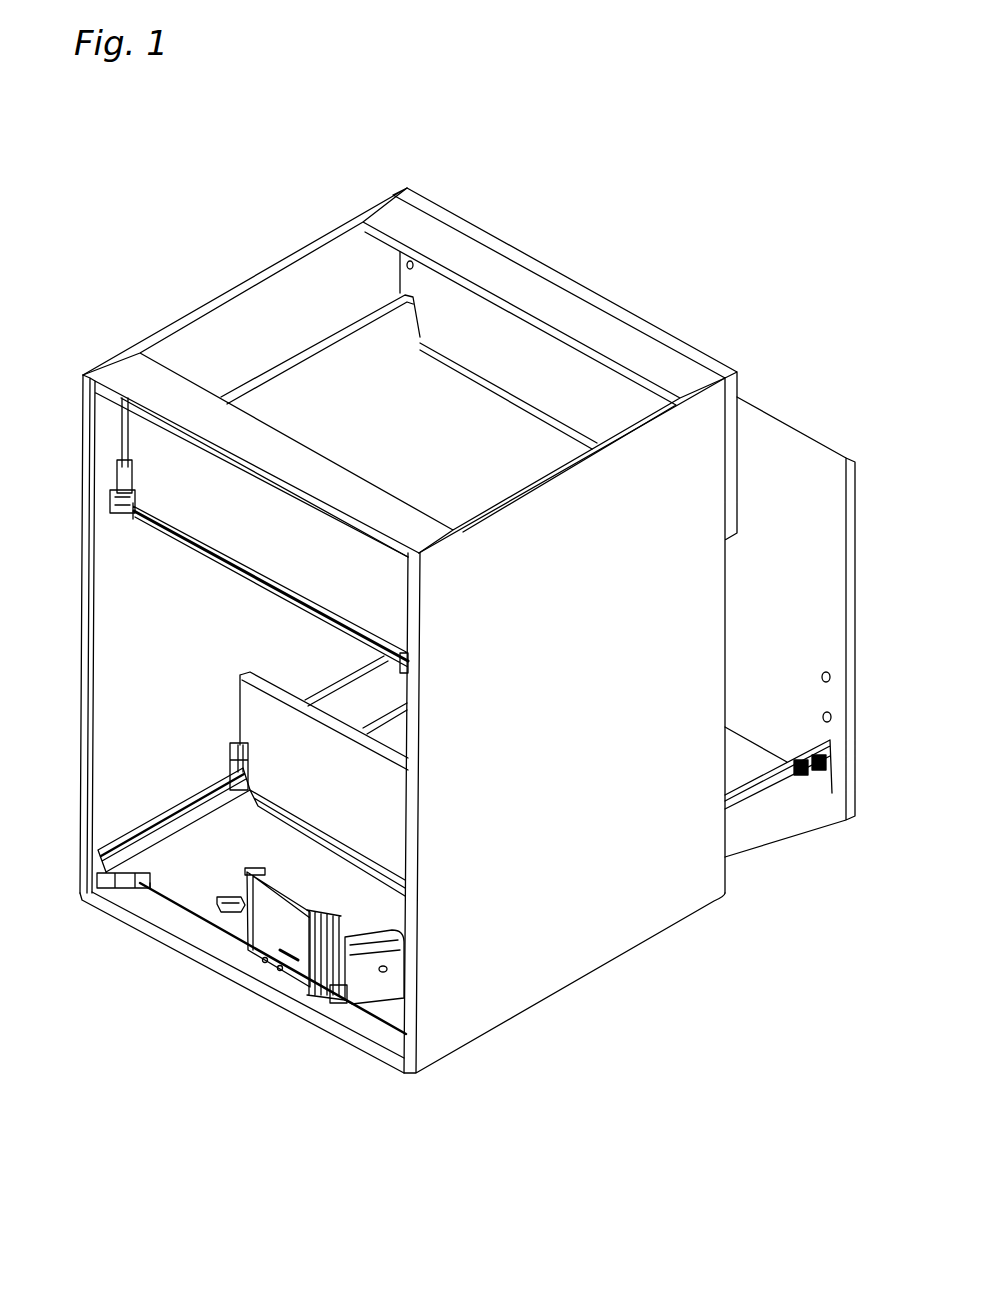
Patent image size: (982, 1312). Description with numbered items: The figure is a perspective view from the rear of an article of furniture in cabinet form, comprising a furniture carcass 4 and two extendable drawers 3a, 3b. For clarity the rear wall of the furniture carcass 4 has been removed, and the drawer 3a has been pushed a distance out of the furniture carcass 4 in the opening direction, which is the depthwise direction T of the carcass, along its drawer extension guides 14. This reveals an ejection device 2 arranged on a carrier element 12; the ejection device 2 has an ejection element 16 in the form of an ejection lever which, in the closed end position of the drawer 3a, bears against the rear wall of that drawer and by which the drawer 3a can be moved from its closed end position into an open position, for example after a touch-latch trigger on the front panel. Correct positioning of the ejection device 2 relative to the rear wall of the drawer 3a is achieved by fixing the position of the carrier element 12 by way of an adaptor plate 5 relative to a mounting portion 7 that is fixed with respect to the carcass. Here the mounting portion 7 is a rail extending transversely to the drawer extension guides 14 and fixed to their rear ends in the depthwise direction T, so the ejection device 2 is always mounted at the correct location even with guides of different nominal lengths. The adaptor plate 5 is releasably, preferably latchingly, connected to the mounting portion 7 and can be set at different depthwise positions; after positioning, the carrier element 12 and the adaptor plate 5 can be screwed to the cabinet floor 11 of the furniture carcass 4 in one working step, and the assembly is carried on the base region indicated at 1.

The furniture body base 1 is at (353, 1008).
The ejection device 2 is at (340, 993).
The drawer 3a is at (783, 472).
The drawer 3b is at (150, 452).
The furniture carcass 4 is at (562, 1000).
The adaptor plate 5 is at (397, 957).
The mounting portion 7 is at (180, 902).
The cabinet floor 11 is at (190, 865).
The carrier element 12 is at (272, 932).
The drawer extension guides 14 is at (132, 837).
The ejection element 16 is at (222, 908).
The depthwise direction T is at (730, 912).